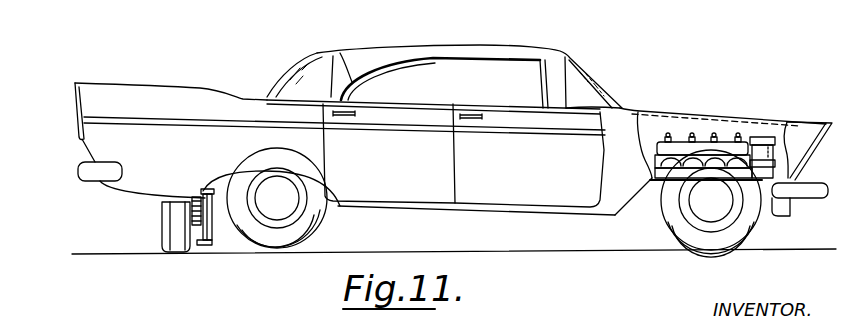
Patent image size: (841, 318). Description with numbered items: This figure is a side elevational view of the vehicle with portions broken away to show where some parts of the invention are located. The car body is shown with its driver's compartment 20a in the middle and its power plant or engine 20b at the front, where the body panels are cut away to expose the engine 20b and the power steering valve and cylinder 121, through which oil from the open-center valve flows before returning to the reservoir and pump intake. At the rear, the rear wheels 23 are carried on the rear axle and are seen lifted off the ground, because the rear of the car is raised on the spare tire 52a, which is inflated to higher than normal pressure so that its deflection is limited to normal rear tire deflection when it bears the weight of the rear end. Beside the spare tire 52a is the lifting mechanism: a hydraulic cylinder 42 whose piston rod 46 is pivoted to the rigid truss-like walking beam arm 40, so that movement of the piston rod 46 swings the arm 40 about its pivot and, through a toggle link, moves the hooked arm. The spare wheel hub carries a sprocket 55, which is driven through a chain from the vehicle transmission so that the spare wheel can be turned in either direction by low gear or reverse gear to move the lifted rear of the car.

The driver's compartment 20a is at (502, 68).
The power plant or engine 20b is at (708, 147).
The power steering valve and cylinder 121 is at (786, 163).
The rear wheels 23 is at (312, 232).
The hydraulic cylinder 42 is at (208, 197).
The sprocket 55 is at (192, 210).
The piston rod 46 is at (212, 226).
The spare tire 52a is at (177, 243).
The walking beam arm 40 is at (210, 244).